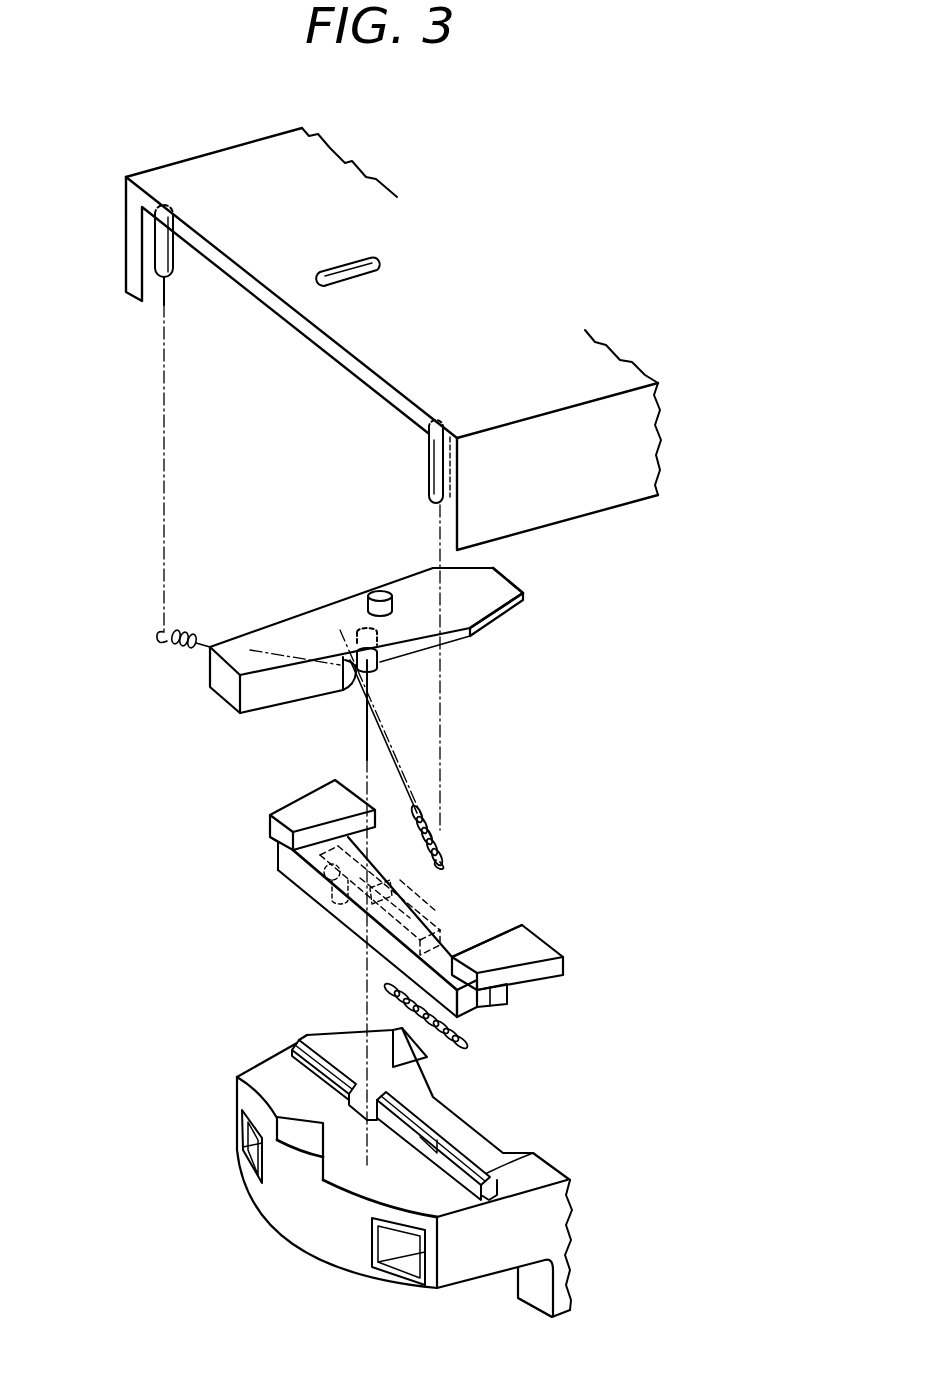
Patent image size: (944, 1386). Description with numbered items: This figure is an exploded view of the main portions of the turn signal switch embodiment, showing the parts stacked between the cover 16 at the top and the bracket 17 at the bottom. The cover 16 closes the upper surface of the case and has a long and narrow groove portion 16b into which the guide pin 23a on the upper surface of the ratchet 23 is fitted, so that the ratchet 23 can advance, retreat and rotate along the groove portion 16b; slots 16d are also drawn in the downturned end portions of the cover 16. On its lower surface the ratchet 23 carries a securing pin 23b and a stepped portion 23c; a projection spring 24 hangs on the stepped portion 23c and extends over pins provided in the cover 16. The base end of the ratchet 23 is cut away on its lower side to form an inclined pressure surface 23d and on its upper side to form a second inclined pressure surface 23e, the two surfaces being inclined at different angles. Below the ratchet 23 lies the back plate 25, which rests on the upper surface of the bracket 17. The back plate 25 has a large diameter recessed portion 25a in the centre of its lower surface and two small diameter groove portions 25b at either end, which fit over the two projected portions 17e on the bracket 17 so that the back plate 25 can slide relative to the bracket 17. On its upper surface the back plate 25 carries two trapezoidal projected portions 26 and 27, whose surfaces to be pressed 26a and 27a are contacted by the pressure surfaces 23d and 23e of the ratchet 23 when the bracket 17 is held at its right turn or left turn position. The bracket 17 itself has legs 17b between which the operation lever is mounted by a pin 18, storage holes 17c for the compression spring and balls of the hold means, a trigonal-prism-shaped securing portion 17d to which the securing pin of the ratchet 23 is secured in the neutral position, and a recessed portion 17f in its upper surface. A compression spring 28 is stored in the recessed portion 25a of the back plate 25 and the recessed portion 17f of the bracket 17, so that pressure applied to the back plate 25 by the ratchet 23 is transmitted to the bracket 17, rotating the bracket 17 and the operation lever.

The cover 16 is at (180, 170).
The groove portion 16b is at (340, 268).
The slot 16d is at (160, 245).
The ratchet 23 is at (225, 688).
The guide pin 23a is at (378, 592).
The securing pin 23b is at (378, 662).
The stepped portion 23c is at (348, 700).
The pressure surface 23d is at (518, 597).
The pressure surface 23e is at (468, 572).
The projection spring 24 is at (430, 815).
The back plate 25 is at (282, 880).
The large diameter recessed portion 25a is at (362, 930).
The small diameter groove portion 25b is at (322, 897).
The projected portion 26 is at (540, 946).
The surface to be pressed 26a is at (487, 952).
The projected portion 27 is at (300, 805).
The surface to be pressed 27a is at (280, 848).
The compression spring 28 is at (466, 1042).
The bracket 17 is at (483, 1265).
The legs 17b is at (420, 1077).
The storage holes 17c is at (248, 1130).
The securing portion 17d is at (297, 1123).
The projected portions 17e is at (290, 1042).
The recessed portion 17f is at (407, 1113).
The pin 18 is at (548, 1208).